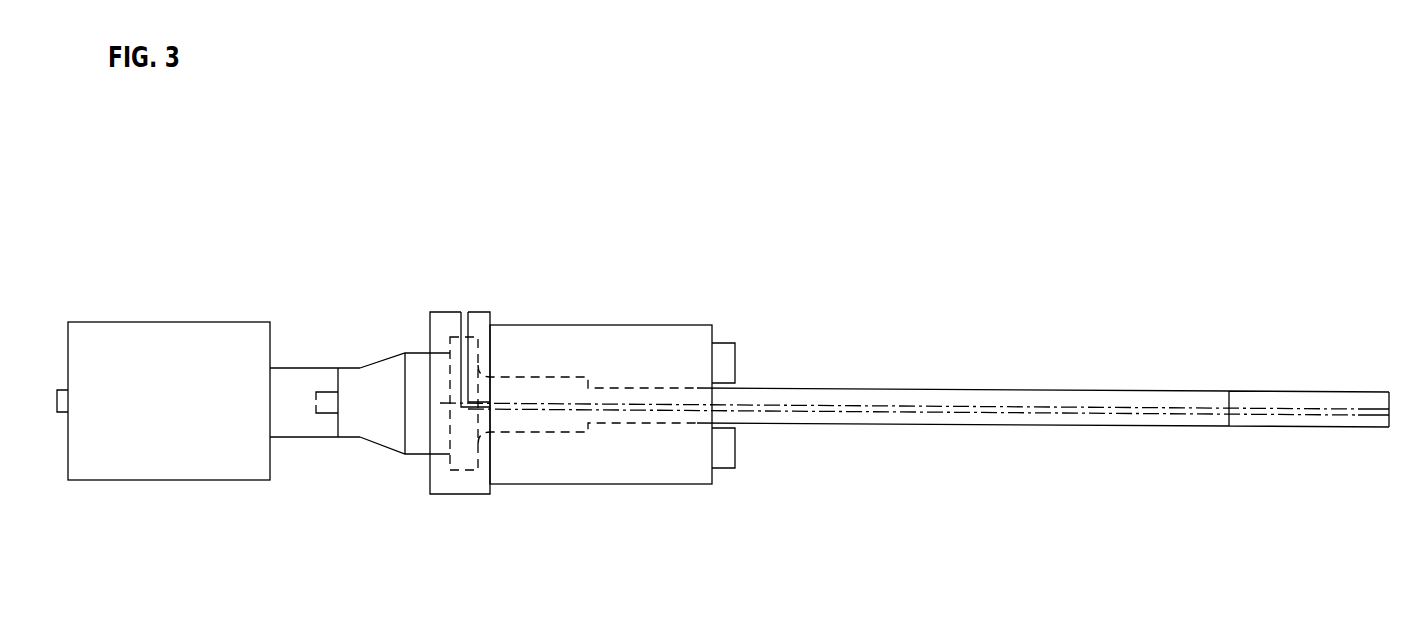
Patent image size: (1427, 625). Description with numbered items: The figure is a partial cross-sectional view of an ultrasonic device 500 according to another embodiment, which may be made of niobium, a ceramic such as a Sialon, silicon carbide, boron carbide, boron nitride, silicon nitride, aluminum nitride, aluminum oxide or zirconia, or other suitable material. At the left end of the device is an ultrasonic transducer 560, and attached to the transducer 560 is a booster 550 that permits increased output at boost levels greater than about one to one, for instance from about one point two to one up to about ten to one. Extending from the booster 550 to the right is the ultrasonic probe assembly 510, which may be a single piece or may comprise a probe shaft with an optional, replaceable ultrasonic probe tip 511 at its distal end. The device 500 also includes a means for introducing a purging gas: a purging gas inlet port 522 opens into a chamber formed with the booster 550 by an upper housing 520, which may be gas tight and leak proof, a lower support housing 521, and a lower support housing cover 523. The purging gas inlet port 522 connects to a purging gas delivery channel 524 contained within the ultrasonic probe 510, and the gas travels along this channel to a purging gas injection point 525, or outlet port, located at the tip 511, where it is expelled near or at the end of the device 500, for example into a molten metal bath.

The ultrasonic device 500 is at (788, 150).
The ultrasonic probe assembly 510 is at (940, 388).
The ultrasonic probe tip 511 is at (1342, 430).
The upper housing 520 is at (490, 497).
The lower support housing 521 is at (602, 486).
The purging gas inlet port 522 is at (466, 308).
The lower support housing cover 523 is at (737, 343).
The purging gas delivery channel 524 is at (1008, 408).
The purging gas injection point 525 is at (1389, 392).
The booster 550 is at (360, 368).
The ultrasonic transducer 560 is at (173, 320).